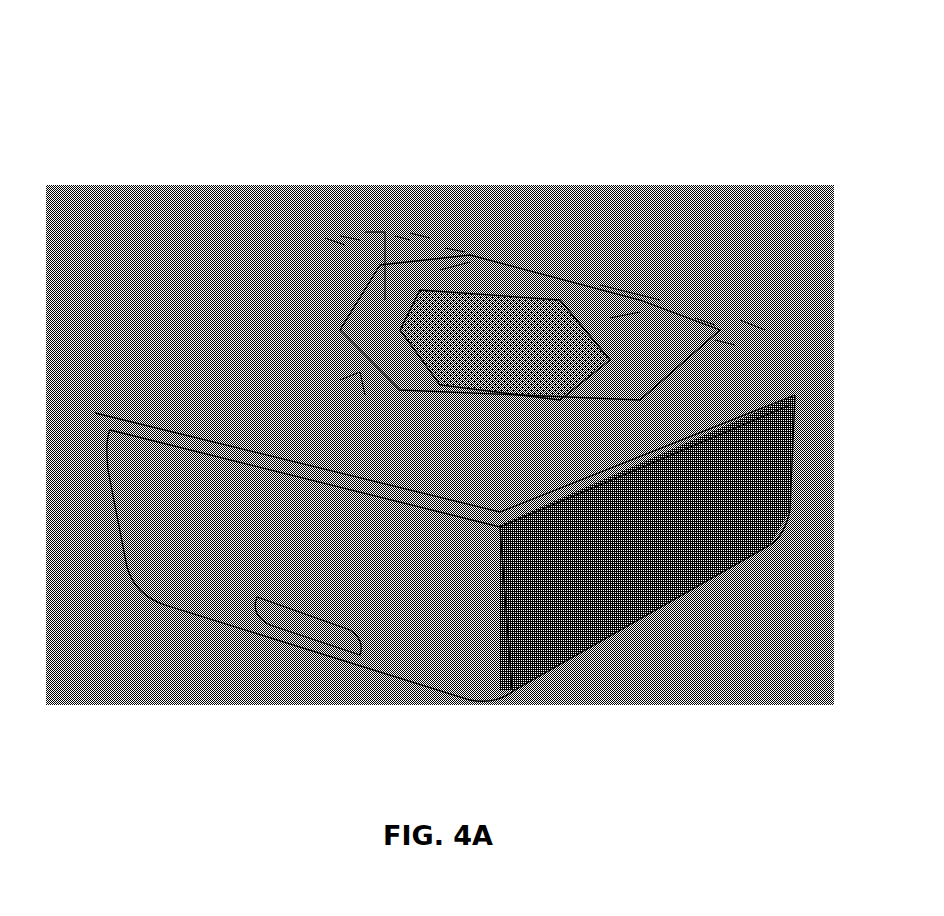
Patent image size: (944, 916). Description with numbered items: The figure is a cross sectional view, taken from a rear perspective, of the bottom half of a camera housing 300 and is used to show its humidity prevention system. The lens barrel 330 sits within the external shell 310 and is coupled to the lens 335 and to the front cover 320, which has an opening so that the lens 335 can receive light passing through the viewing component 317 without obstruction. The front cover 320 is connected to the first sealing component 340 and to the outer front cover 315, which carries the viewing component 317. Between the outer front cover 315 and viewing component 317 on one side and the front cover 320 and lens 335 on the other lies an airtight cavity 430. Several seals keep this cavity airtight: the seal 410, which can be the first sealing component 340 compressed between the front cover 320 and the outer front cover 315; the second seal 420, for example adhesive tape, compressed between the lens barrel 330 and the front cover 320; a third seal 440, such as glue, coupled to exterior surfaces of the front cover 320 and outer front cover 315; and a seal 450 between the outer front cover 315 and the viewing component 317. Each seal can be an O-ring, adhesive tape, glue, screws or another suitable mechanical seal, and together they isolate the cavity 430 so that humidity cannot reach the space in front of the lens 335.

The camera housing 300 is at (657, 78).
The external shell 310 is at (643, 550).
The outer front cover 315 is at (375, 228).
The viewing component 317 is at (648, 292).
The front cover 320 is at (333, 235).
The lens barrel 330 is at (345, 385).
The lens 335 is at (545, 278).
The first sealing component 340 is at (657, 373).
The seal 410 is at (400, 233).
The second seal 420 is at (445, 268).
The airtight cavity 430 is at (452, 245).
The third seal 440 is at (346, 233).
The seal 450 is at (417, 230).